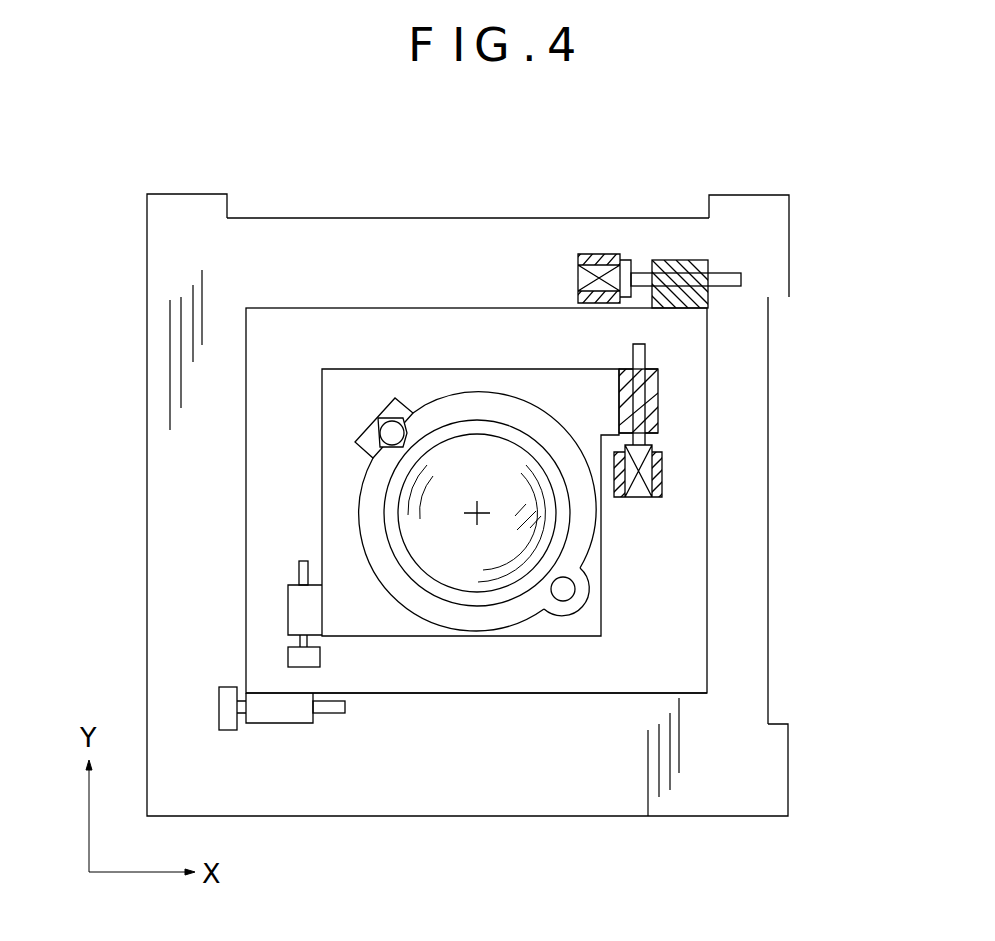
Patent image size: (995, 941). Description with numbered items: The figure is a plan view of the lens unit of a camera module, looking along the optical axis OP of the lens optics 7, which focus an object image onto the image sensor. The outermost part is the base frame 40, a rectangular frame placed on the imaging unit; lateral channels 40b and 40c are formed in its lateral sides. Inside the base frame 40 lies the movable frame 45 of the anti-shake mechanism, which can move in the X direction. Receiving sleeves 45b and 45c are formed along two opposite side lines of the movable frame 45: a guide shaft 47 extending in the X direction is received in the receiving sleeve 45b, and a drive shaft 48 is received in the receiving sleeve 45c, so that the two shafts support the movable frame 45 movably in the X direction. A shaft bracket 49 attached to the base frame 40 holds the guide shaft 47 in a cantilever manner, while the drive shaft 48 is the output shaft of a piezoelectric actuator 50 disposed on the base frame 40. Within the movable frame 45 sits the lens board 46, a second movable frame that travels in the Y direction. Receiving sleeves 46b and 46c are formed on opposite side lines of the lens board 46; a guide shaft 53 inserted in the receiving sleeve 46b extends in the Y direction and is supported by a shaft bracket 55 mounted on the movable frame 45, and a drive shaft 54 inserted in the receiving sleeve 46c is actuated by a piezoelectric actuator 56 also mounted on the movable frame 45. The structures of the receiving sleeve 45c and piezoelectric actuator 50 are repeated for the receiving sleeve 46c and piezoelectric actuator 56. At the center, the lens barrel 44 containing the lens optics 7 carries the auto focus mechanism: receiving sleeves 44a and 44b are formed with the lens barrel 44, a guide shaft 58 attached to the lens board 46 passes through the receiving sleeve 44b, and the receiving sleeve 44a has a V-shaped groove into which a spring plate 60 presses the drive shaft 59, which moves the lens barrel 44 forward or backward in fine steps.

The base frame 40 is at (287, 240).
The lateral channel 40b is at (769, 588).
The lateral channel 40c is at (415, 217).
The lens barrel 44 is at (498, 417).
The receiving sleeve 44a is at (414, 411).
The receiving sleeve 44b is at (568, 607).
The movable frame 45 is at (542, 694).
The receiving sleeve 45b is at (277, 723).
The receiving sleeve 45c is at (682, 262).
The lens board 46 is at (332, 493).
The receiving sleeve 46b is at (313, 609).
The receiving sleeve 46c is at (657, 405).
The guide shaft 47 is at (337, 716).
The drive shaft 48 is at (738, 272).
The shaft bracket 49 is at (222, 731).
The piezoelectric actuator 50 is at (582, 277).
The guide shaft 53 is at (300, 565).
The drive shaft 54 is at (636, 351).
The shaft bracket 55 is at (311, 657).
The piezoelectric actuator 56 is at (657, 472).
The guide shaft 58 is at (576, 587).
The drive shaft 59 is at (386, 437).
The spring plate 60 is at (384, 420).
The lens optics 7 is at (425, 533).
The optical axis OP is at (480, 510).